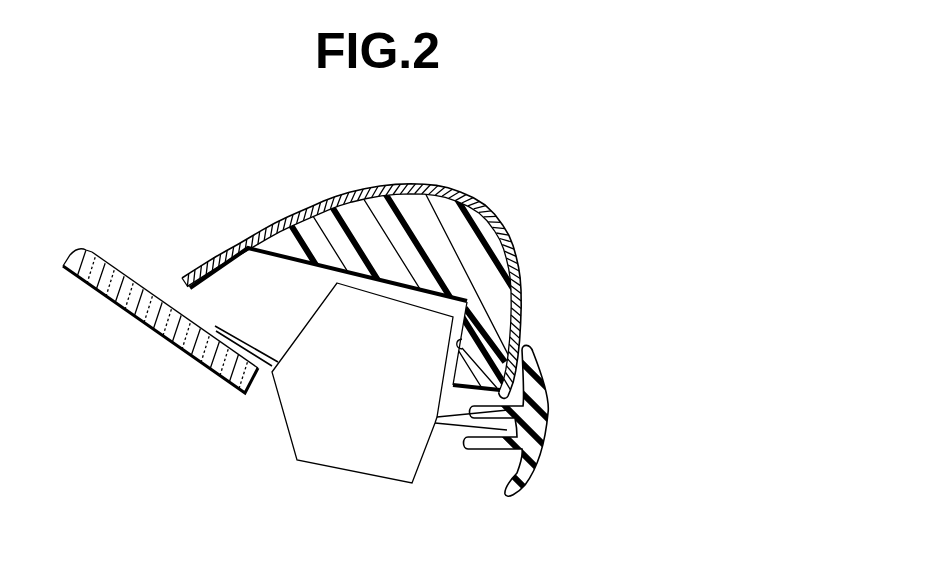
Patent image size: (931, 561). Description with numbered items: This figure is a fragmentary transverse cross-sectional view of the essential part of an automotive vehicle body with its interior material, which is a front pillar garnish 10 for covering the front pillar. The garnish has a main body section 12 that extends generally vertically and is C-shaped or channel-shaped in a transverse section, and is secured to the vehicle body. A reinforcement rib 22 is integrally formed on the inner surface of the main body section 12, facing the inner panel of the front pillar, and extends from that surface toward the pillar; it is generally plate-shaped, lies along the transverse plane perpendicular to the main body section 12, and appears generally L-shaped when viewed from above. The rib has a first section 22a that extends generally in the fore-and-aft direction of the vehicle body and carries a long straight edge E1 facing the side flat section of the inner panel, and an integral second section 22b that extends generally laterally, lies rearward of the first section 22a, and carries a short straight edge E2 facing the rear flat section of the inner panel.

The front pillar garnish 10 is at (503, 202).
The main body section 12 is at (407, 185).
The reinforcement rib 22 is at (477, 253).
The first section 22a is at (357, 210).
The second section 22b is at (487, 370).
The long straight edge E1 is at (303, 265).
The short straight edge E2 is at (461, 345).